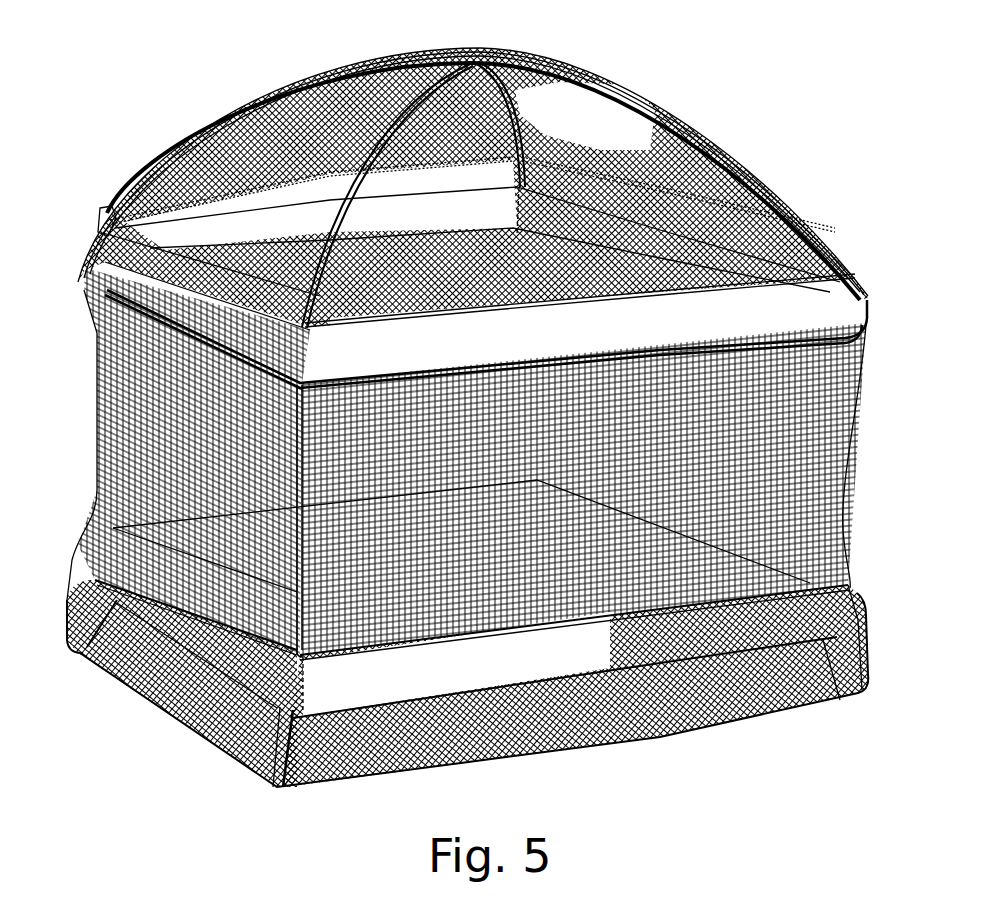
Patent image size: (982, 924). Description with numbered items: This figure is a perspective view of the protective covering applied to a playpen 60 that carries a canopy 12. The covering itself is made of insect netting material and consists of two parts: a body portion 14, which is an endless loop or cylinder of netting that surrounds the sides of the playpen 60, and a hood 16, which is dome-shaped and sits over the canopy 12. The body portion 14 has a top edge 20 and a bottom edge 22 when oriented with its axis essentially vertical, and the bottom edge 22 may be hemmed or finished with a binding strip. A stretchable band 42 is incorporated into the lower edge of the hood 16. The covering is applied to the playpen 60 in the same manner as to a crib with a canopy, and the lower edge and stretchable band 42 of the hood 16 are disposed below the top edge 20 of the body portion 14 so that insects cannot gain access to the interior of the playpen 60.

The playpen 60 is at (456, 397).
The canopy 12 is at (473, 198).
The body portion 14 is at (456, 527).
The hood 16 is at (107, 208).
The top edge 20 is at (287, 232).
The bottom edge 22 is at (213, 343).
The stretchable band 42 is at (240, 362).